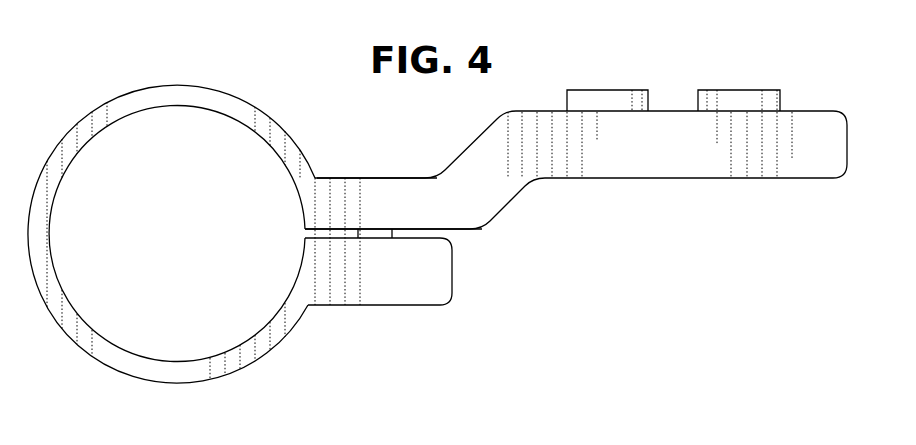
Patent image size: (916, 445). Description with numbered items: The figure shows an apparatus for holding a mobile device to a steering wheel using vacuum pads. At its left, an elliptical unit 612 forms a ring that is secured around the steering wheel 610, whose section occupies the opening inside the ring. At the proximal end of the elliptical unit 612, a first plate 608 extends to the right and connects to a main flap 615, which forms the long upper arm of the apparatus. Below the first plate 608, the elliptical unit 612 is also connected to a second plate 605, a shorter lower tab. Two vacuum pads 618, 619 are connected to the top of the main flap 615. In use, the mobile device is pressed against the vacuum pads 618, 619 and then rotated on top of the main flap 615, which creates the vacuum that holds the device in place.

The second plate 605 is at (370, 282).
The first plate 608 is at (382, 197).
The steering wheel 610 is at (200, 255).
The elliptical unit 612 is at (106, 108).
The main flap 615 is at (667, 167).
The vacuum pad 618 is at (600, 98).
The vacuum pad 619 is at (737, 98).